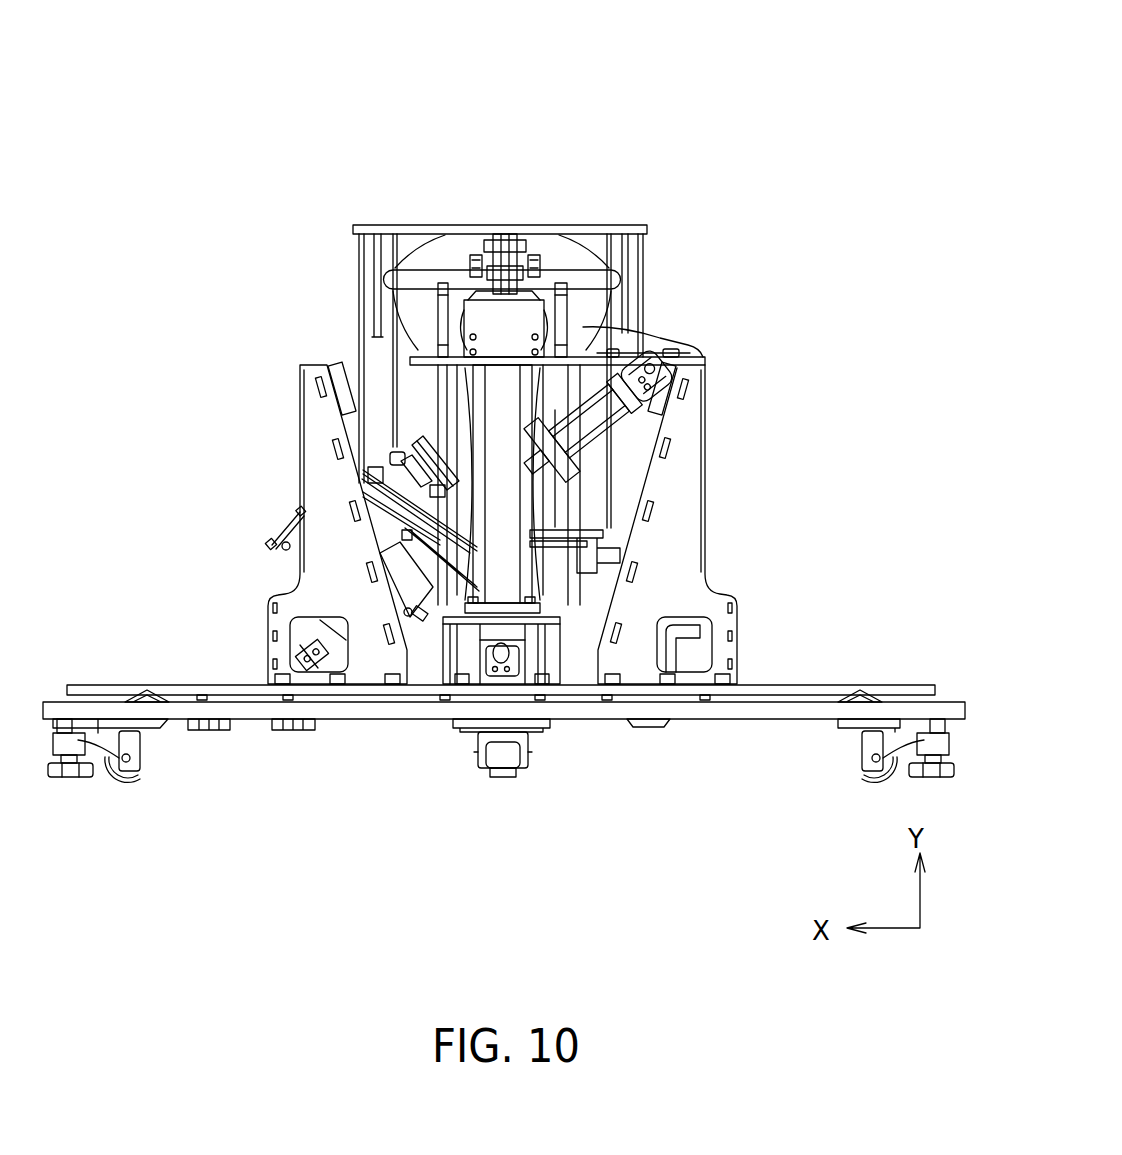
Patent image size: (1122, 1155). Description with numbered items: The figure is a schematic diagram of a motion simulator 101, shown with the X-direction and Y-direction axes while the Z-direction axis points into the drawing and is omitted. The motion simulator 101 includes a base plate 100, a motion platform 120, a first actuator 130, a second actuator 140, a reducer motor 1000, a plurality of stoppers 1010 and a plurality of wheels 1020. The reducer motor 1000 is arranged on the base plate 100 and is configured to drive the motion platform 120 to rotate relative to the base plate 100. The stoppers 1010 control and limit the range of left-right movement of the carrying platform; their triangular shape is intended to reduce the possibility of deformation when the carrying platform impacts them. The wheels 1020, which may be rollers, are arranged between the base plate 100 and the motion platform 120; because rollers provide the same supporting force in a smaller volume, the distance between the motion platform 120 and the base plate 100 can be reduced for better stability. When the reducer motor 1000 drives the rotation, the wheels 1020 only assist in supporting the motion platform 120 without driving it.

The motion simulator 101 is at (735, 100).
The base plate 100 is at (537, 225).
The reducer motor 1000 is at (513, 674).
The stoppers 1010 is at (300, 437).
The wheels 1020 is at (146, 698).
The motion platform 120 is at (782, 687).
The first actuator 130 is at (593, 430).
The second actuator 140 is at (487, 325).